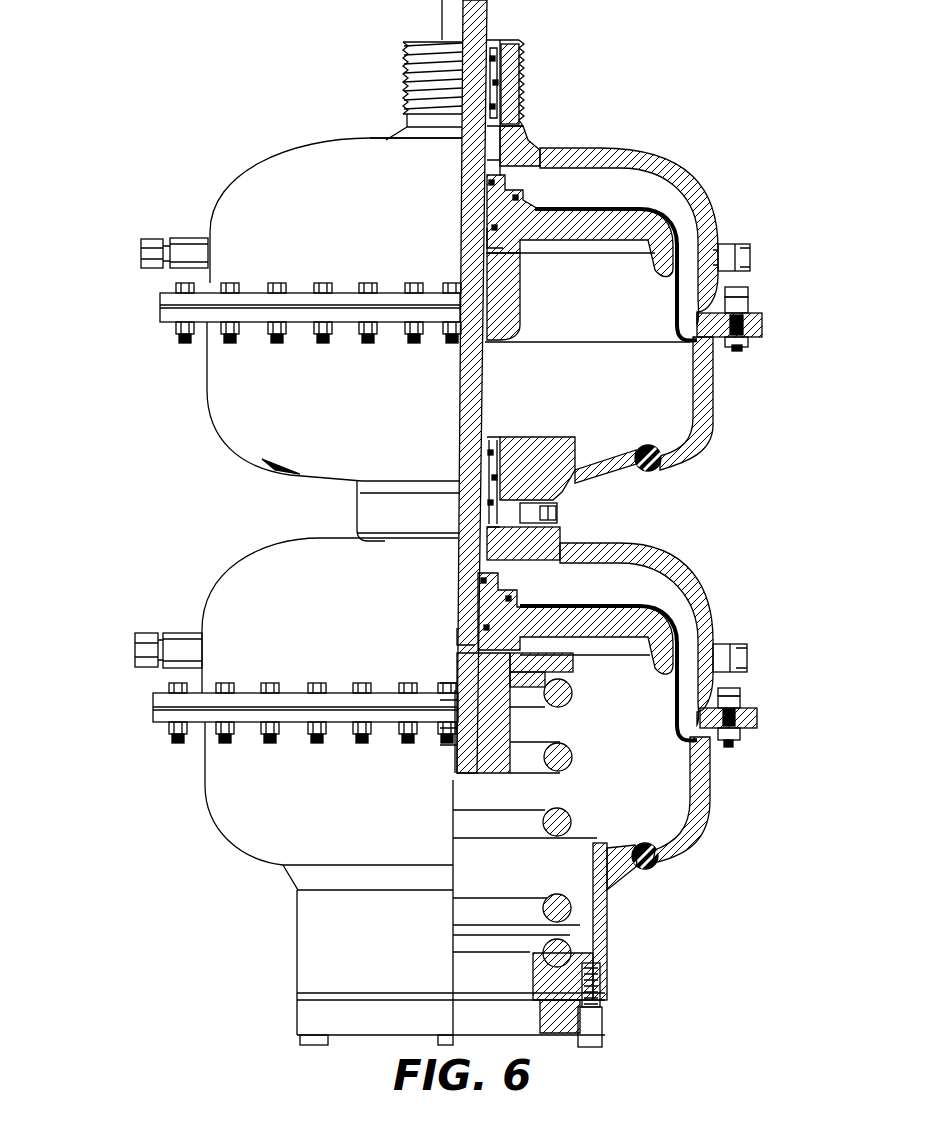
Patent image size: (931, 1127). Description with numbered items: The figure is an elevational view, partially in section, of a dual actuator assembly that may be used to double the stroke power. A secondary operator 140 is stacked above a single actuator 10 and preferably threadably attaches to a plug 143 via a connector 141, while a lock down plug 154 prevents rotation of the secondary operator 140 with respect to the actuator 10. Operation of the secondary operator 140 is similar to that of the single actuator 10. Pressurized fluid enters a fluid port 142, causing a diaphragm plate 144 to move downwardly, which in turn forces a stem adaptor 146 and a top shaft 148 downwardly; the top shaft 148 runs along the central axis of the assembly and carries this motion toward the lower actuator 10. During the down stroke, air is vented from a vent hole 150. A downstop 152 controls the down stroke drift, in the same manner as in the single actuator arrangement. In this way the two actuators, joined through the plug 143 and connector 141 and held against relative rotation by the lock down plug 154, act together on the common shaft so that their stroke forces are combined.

The single actuator 10 is at (182, 594).
The secondary operator 140 is at (203, 155).
The connector 141 is at (588, 480).
The fluid port 142 is at (752, 255).
The plug 143 is at (457, 528).
The diaphragm plate 144 is at (627, 212).
The stem adaptor 146 is at (540, 212).
The top shaft 148 is at (466, 420).
The vent hole 150 is at (663, 465).
The downstop 152 is at (505, 740).
The lock down plug 154 is at (558, 513).